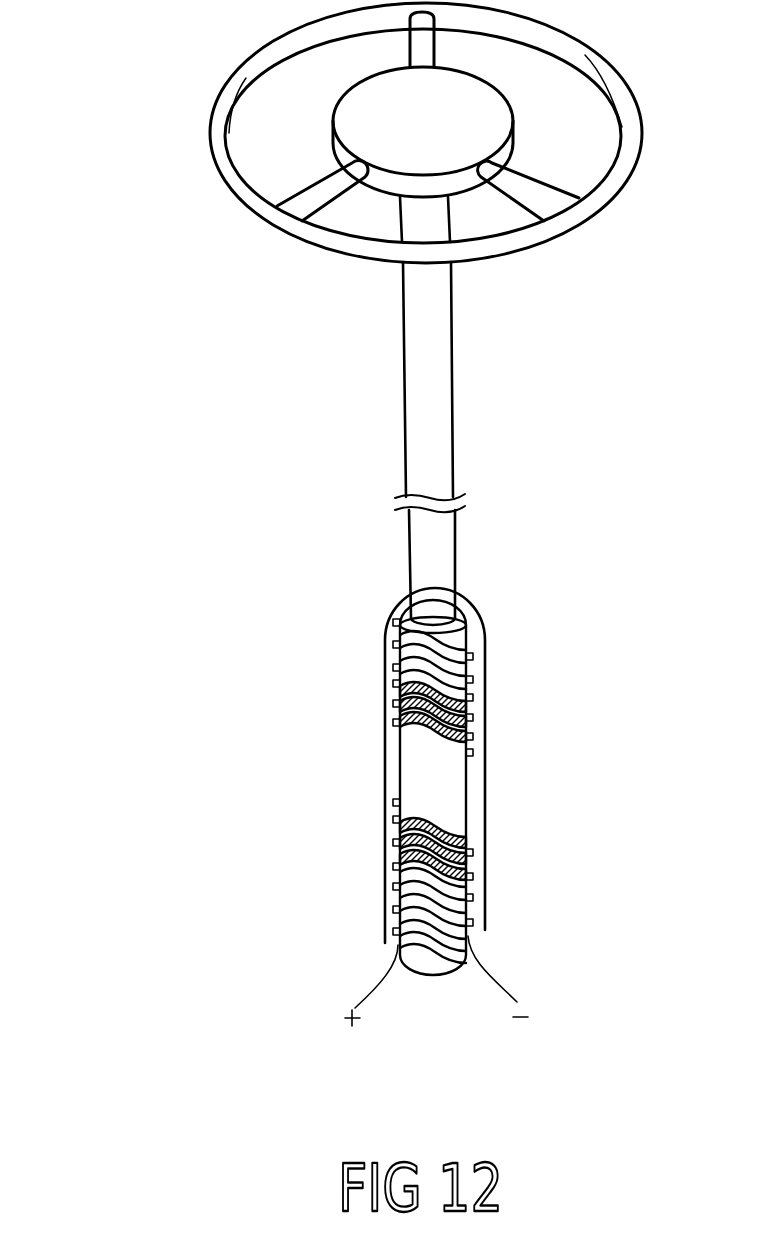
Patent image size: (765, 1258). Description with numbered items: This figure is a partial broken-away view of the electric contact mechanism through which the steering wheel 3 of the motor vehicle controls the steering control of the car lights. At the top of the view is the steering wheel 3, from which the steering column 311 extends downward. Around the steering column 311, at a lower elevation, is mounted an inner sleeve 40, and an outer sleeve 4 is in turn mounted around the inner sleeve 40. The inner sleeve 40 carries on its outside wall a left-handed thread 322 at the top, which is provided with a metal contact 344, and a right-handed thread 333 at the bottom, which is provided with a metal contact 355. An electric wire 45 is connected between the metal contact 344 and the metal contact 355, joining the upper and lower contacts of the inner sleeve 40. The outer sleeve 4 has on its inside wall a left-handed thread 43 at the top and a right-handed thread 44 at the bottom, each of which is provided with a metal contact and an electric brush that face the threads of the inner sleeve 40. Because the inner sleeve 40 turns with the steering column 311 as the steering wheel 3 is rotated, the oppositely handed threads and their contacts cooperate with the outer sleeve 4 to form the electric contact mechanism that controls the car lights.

The steering wheel 3 is at (628, 123).
The steering column 311 is at (442, 421).
The outer sleeve 4 is at (468, 593).
The left-handed thread 43 is at (397, 625).
The left-handed thread 322 is at (387, 650).
The metal contact 344 is at (400, 733).
The inner sleeve 40 is at (445, 785).
The electric wire 45 is at (427, 811).
The metal contact 355 is at (463, 837).
The right-handed thread 333 is at (473, 872).
The right-handed thread 44 is at (397, 935).